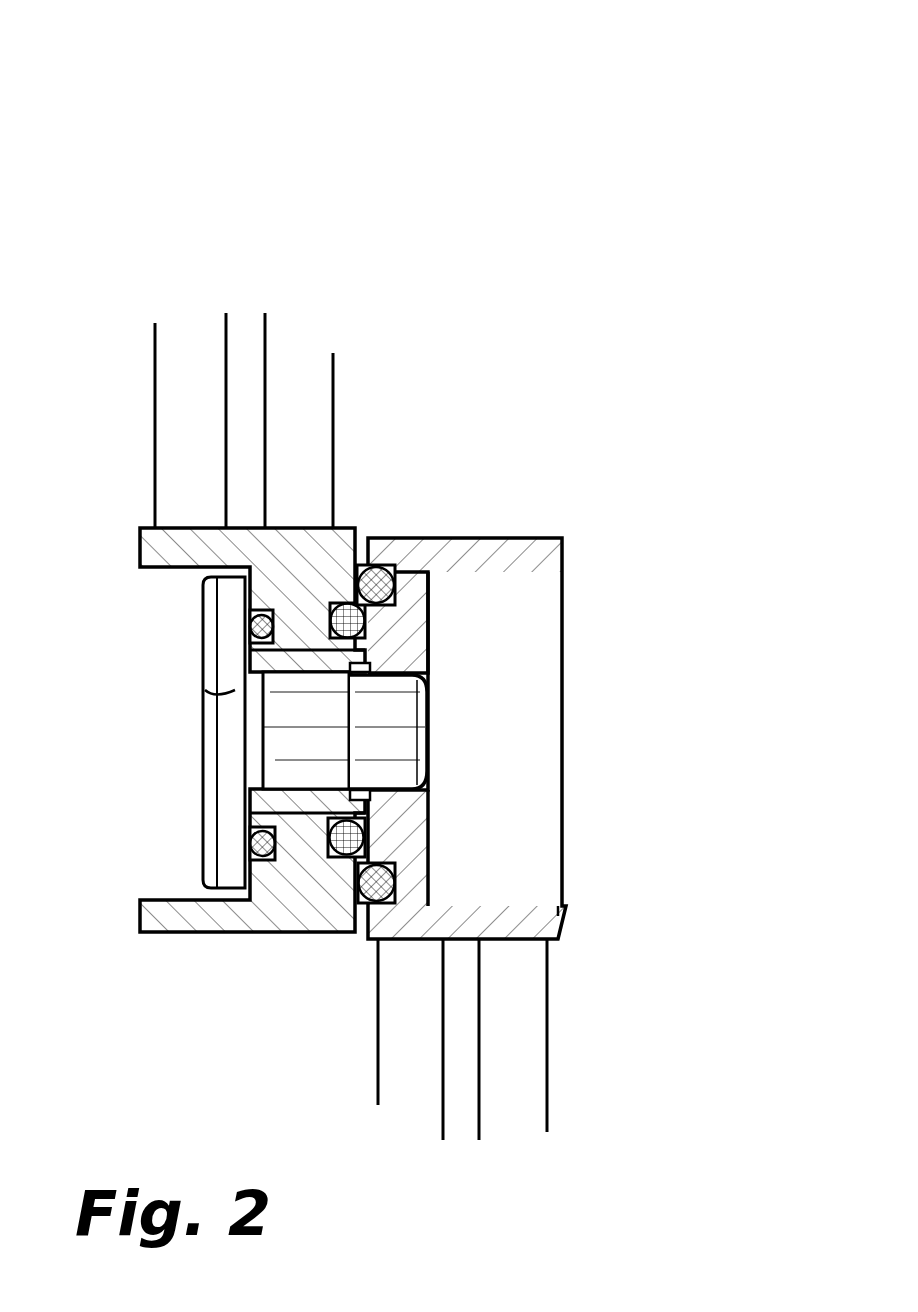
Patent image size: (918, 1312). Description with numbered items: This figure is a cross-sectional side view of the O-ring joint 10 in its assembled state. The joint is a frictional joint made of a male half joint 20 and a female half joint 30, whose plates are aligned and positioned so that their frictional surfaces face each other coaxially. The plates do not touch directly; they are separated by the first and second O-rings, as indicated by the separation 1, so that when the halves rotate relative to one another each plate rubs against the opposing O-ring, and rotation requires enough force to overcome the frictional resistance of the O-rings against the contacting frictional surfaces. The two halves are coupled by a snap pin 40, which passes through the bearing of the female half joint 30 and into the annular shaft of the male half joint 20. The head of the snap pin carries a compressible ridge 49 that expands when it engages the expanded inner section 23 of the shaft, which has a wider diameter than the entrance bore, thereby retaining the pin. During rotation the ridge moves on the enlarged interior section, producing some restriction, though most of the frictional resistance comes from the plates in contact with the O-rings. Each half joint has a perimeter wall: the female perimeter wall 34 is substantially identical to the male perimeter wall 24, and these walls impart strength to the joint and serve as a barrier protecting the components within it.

The O-ring joint 10 is at (381, 575).
The separation between the plates 1 is at (365, 537).
The male half joint 20 is at (531, 761).
The male perimeter wall 24 is at (497, 550).
The female half joint 30 is at (228, 717).
The female perimeter wall 34 is at (168, 920).
The snap pin 40 is at (198, 806).
The compressible ridge 49 is at (357, 677).
The expanded inner section 23 is at (360, 800).